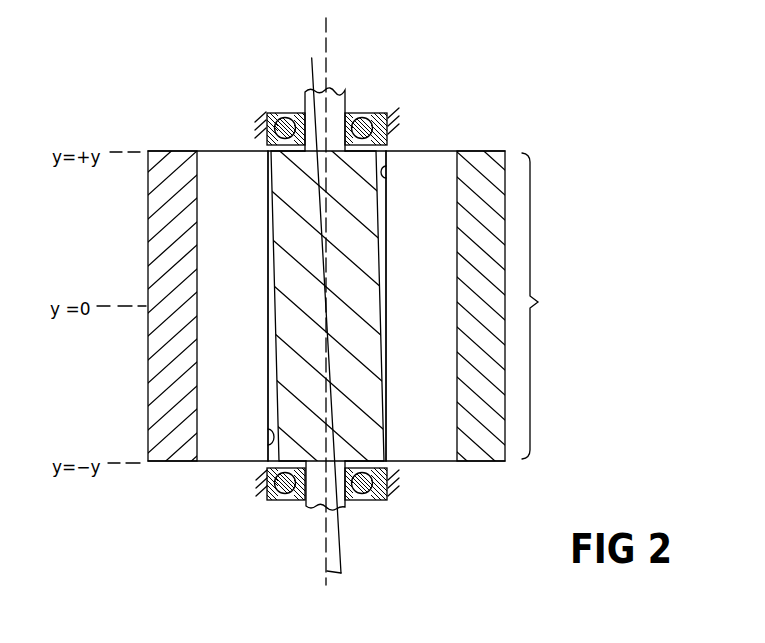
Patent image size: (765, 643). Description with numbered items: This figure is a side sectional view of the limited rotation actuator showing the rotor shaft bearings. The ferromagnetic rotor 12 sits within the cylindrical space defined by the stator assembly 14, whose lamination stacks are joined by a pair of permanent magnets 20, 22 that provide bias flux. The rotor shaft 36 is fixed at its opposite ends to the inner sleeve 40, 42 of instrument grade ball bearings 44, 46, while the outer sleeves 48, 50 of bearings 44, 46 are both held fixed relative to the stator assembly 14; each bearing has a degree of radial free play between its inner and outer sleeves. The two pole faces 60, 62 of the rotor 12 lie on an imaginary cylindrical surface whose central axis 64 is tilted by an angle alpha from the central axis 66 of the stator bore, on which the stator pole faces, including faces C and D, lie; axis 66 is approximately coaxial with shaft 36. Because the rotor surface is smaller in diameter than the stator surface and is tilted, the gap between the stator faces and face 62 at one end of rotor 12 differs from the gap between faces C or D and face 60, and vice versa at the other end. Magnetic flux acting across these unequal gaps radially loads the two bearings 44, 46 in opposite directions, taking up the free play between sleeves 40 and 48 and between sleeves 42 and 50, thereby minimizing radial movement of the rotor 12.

The rotor 12 is at (342, 392).
The stator assembly 14 is at (356, 306).
The permanent magnet 20 is at (465, 397).
The permanent magnet 22 is at (182, 402).
The rotor shaft 36 is at (347, 98).
The inner sleeve 40 is at (297, 112).
The inner sleeve 42 is at (298, 500).
The ball bearing 44 is at (397, 106).
The ball bearing 46 is at (395, 507).
The outer sleeve 48 is at (267, 117).
The outer sleeve 50 is at (272, 500).
The rotor pole face 60 is at (381, 302).
The rotor pole face 62 is at (273, 343).
The central axis 64 is at (341, 520).
The central axis 66 is at (330, 40).
The stator pole face C is at (386, 168).
The stator pole face D is at (268, 447).